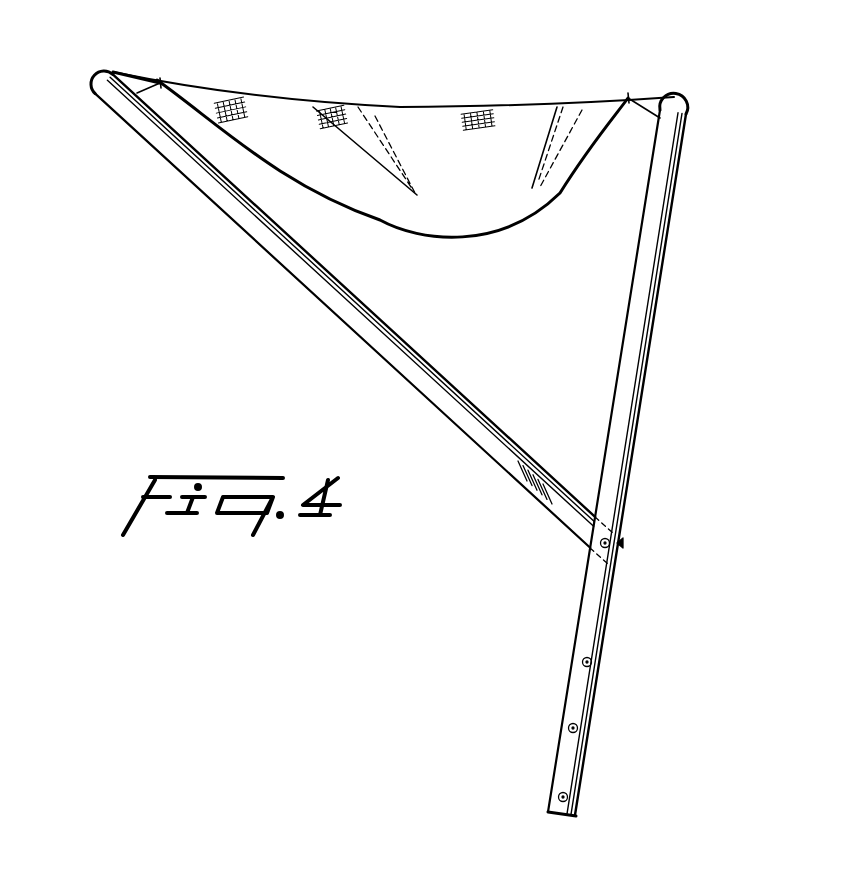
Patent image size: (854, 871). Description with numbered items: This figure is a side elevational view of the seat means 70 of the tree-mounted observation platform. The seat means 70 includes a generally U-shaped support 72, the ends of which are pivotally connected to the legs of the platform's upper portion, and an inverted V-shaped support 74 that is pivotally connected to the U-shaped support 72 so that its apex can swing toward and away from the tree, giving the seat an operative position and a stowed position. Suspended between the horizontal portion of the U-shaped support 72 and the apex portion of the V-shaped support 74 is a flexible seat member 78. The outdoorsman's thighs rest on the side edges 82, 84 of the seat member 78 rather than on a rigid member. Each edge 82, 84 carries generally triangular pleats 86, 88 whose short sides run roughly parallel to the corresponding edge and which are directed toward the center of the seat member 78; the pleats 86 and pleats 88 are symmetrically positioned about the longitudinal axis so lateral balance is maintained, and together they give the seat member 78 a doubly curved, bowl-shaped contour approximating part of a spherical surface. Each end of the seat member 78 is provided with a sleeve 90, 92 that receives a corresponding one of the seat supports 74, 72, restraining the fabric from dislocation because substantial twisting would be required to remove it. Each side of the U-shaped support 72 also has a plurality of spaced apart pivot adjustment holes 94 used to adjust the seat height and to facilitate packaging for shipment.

The seat means 70 is at (310, 288).
The U-shaped support 72 is at (653, 428).
The V-shaped support 74 is at (328, 283).
The seat member 78 is at (442, 198).
The side edge 82 is at (512, 77).
The side edge 84 is at (473, 103).
The pleat 86 is at (573, 97).
The pleat 88 is at (370, 103).
The sleeve 90 is at (108, 70).
The sleeve 92 is at (680, 92).
The pivot adjustment holes 94 is at (567, 787).